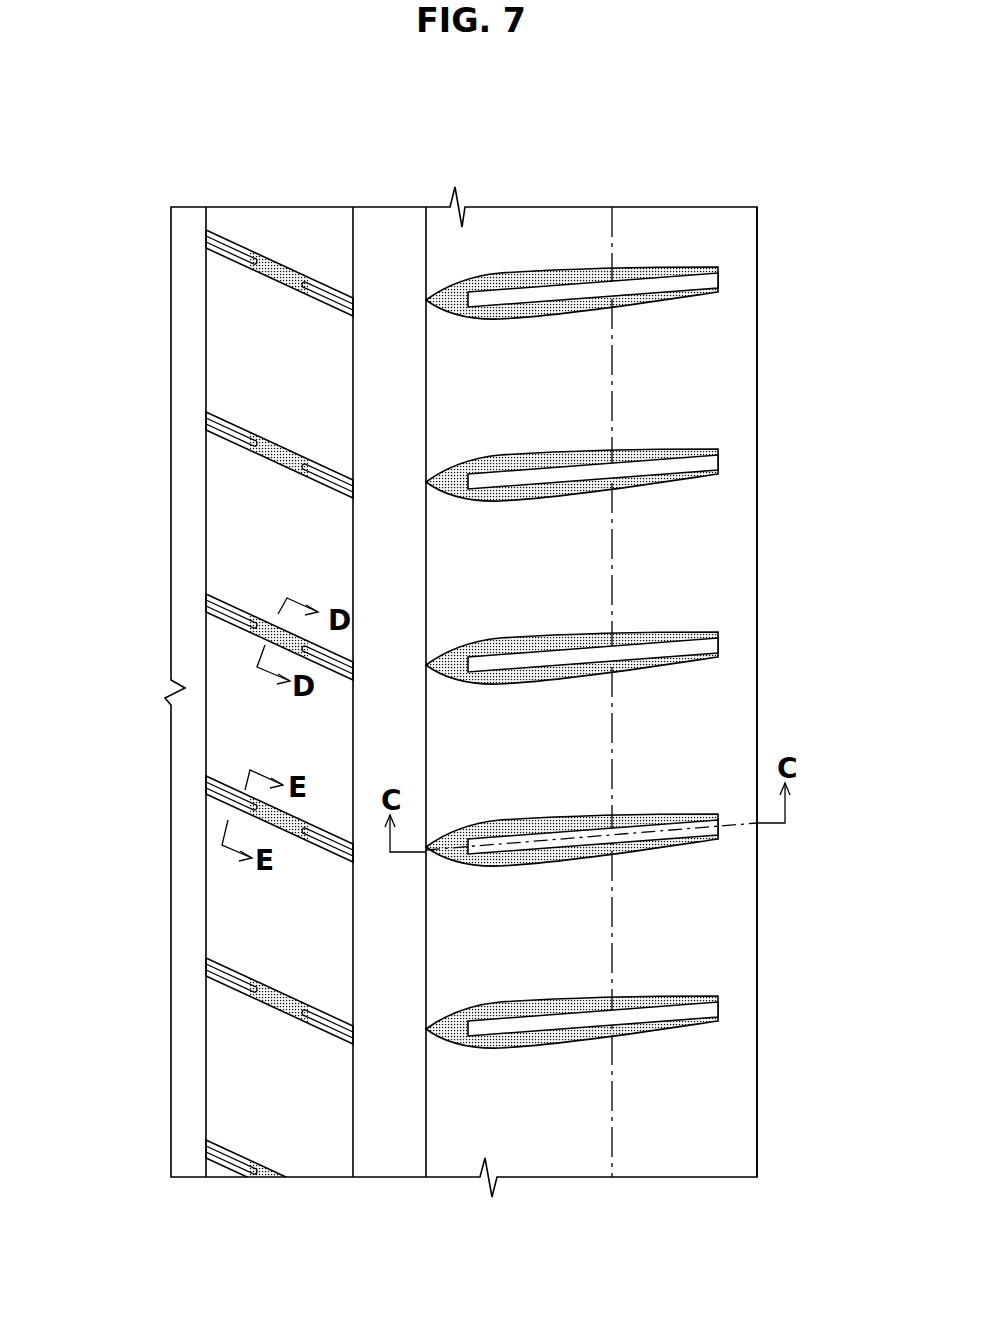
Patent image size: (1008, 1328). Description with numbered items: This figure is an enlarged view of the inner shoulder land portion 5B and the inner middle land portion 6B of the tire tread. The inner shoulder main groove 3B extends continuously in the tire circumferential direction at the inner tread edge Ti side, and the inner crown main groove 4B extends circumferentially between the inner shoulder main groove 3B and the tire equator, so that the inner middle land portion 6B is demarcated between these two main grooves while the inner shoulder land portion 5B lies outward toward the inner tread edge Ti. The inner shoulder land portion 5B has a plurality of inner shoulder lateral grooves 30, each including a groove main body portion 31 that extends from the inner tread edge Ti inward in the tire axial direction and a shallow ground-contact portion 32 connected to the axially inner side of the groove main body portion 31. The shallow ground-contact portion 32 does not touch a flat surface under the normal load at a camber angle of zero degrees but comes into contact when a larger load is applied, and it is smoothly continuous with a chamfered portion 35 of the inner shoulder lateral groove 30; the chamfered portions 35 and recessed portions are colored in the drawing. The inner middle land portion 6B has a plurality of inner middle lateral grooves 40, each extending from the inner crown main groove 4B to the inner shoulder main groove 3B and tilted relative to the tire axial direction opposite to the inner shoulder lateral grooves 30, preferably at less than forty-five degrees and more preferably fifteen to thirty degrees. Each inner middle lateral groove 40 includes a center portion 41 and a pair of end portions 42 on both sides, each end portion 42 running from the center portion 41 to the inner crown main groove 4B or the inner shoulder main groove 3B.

The inner shoulder main groove 3B is at (389, 253).
The inner crown main groove 4B is at (187, 253).
The inner shoulder land portion 5B is at (535, 253).
The inner middle land portion 6B is at (283, 240).
The inner tread edge Ti is at (613, 238).
The inner shoulder lateral groove 30 is at (823, 310).
The groove main body portion 31 is at (567, 477).
The shallow ground-contact portion 32 is at (447, 485).
The chamfered portion 35 is at (560, 658).
The inner middle lateral groove 40 is at (100, 427).
The center portion 41 is at (282, 458).
The end portion 42 is at (217, 433).